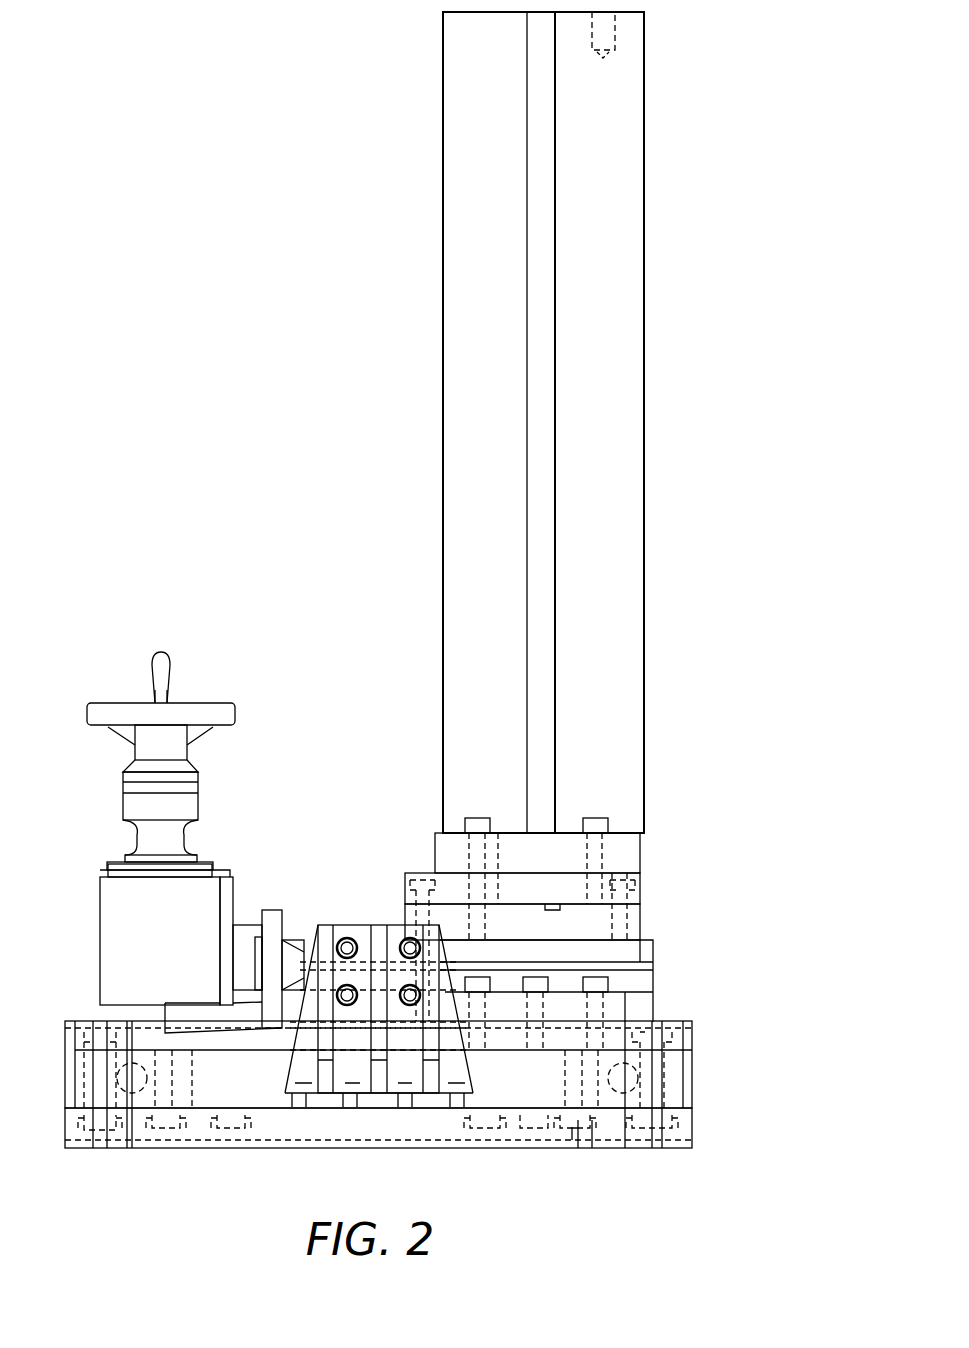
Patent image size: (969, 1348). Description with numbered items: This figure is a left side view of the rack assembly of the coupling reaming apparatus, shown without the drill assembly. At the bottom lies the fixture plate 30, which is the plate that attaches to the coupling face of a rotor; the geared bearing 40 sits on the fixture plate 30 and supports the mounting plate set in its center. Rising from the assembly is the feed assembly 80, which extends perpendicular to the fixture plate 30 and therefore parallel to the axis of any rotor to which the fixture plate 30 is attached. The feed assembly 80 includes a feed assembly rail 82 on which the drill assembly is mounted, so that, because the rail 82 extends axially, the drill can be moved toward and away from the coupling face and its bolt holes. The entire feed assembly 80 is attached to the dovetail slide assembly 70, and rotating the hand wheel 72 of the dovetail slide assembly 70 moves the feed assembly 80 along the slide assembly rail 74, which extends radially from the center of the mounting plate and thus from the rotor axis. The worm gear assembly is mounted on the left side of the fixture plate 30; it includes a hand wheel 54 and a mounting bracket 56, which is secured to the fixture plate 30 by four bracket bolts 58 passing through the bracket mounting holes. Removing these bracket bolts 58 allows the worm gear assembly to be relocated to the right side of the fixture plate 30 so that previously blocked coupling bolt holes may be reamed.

The fixture plate 30 is at (528, 1148).
The geared bearing 40 is at (689, 1082).
The hand wheel 54 is at (266, 918).
The mounting bracket 56 is at (294, 1068).
The bracket bolts 58 is at (452, 1083).
The dovetail slide assembly 70 is at (108, 928).
The hand wheel 72 is at (88, 712).
The slide assembly rail 74 is at (302, 945).
The feed assembly 80 is at (535, 266).
The feed assembly rail 82 is at (443, 360).